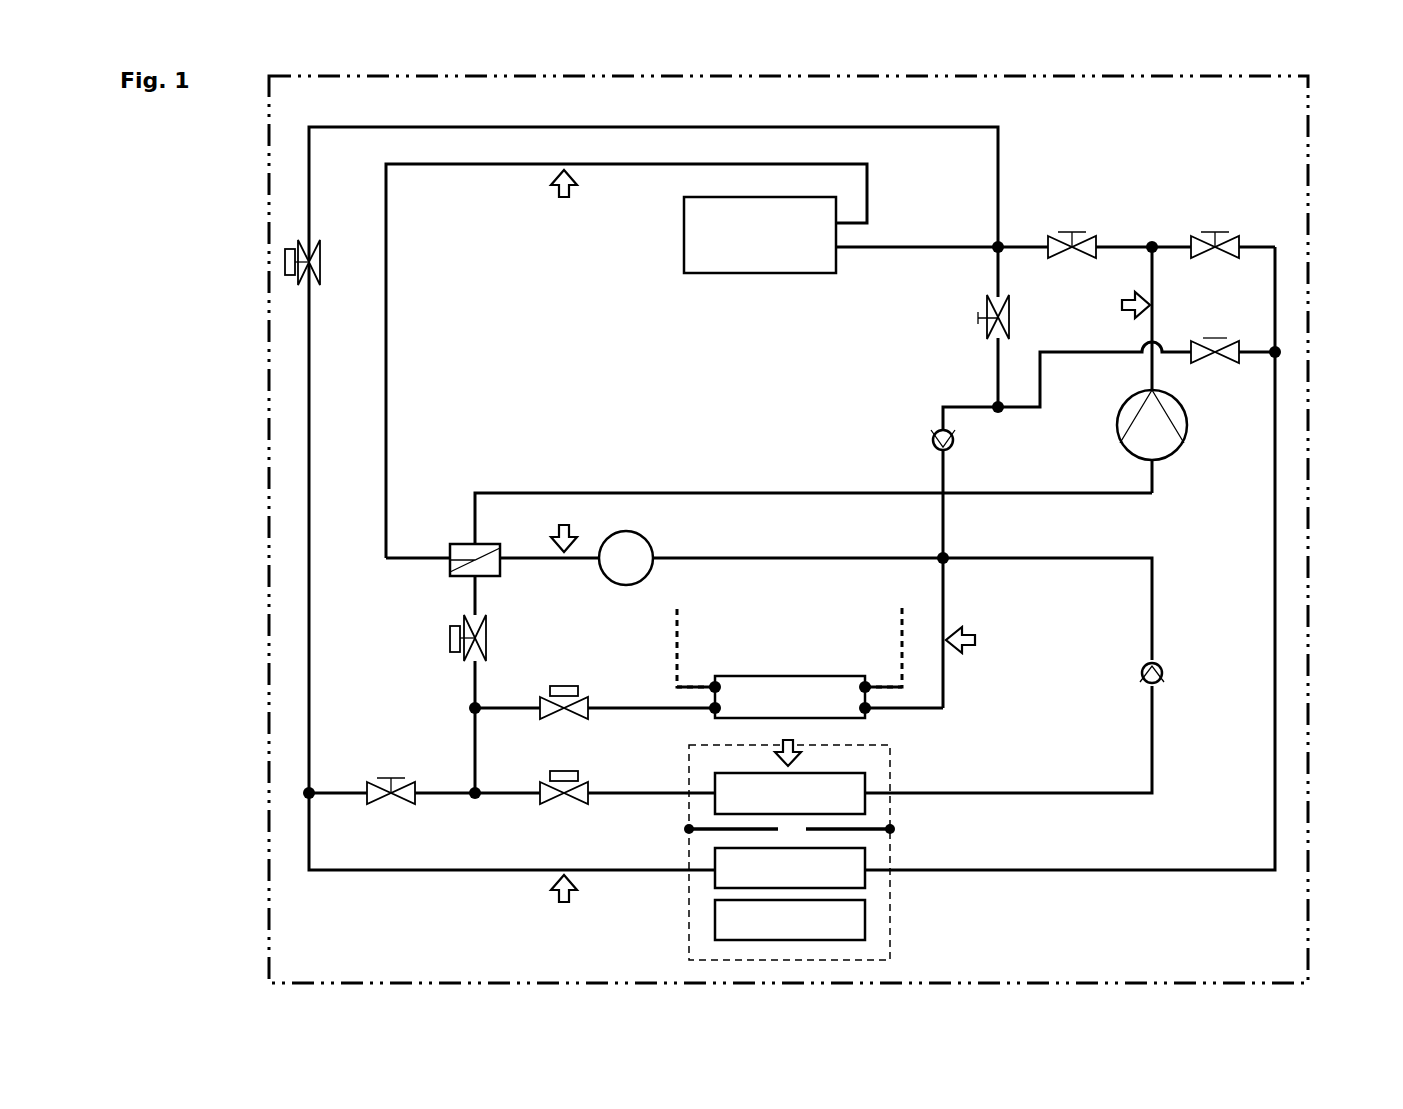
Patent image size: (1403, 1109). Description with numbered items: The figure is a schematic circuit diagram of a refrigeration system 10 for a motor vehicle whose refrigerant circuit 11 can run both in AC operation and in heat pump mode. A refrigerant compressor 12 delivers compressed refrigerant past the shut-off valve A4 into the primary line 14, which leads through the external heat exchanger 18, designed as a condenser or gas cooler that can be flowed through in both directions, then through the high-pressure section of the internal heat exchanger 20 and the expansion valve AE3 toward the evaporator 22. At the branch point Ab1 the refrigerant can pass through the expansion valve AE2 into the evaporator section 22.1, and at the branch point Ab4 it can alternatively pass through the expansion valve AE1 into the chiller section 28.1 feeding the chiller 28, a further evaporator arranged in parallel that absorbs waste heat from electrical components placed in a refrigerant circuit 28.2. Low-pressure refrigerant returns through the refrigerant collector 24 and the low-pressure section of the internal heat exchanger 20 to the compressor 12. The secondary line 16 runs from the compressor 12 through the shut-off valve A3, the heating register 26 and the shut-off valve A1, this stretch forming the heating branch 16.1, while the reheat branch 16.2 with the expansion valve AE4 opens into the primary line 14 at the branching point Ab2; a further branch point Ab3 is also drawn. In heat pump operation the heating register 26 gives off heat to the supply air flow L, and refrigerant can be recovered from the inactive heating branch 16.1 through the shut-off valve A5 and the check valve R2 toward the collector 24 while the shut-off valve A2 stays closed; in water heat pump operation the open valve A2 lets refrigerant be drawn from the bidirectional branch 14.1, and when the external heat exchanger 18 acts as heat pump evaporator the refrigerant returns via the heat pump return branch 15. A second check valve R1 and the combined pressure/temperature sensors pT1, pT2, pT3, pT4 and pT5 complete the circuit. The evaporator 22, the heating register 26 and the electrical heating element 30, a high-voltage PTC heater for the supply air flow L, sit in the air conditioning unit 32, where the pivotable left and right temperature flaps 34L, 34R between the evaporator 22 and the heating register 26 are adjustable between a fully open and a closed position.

The refrigeration system 10 is at (1308, 234).
The refrigerant circuit 11 is at (753, 493).
The refrigerant compressor 12 is at (1152, 370).
The primary line 14 is at (882, 248).
The bidirectional branch 14.1 is at (518, 165).
The heat pump return branch 15 is at (997, 372).
The secondary line 16 is at (1278, 296).
The heating branch 16.1 is at (1277, 663).
The reheat branch 16.2 is at (308, 662).
The external heat exchanger 18 is at (760, 235).
The internal heat exchanger 20 is at (455, 544).
The evaporator 22 is at (790, 793).
The evaporator section 22.1 is at (614, 791).
The refrigerant collector 24 is at (875, 595).
The heating register 26 is at (790, 868).
The chiller 28 is at (826, 697).
The chiller section 28.1 is at (622, 707).
The refrigerant circuit 28.2 is at (680, 631).
The electrical heating element 30 is at (790, 920).
The air conditioning unit 32 is at (891, 918).
The left temperature flap 34L is at (684, 829).
The right temperature flap 34R is at (896, 829).
The shut-off valve A1 is at (391, 778).
The shut-off valve A2 is at (978, 318).
The shut-off valve A3 is at (1215, 230).
The shut-off valve A4 is at (1072, 230).
The shut-off valve A5 is at (1215, 338).
The expansion valve AE1 is at (564, 686).
The expansion valve AE2 is at (564, 806).
The expansion valve AE3 is at (450, 638).
The expansion valve AE4 is at (285, 262).
The branch point Ab1 is at (475, 802).
The branching point Ab2 is at (995, 245).
The branch point Ab3 is at (998, 414).
The branch point Ab4 is at (472, 707).
The pressure/temperature sensor pT1 is at (1122, 305).
The pressure/temperature sensor pT2 is at (564, 525).
The pressure/temperature sensor pT3 is at (564, 197).
The pressure/temperature sensor pT4 is at (564, 902).
The pressure/temperature sensor pT5 is at (975, 640).
The check valve R1 is at (1165, 670).
The check valve R2 is at (932, 441).
The supply air flow L is at (802, 762).